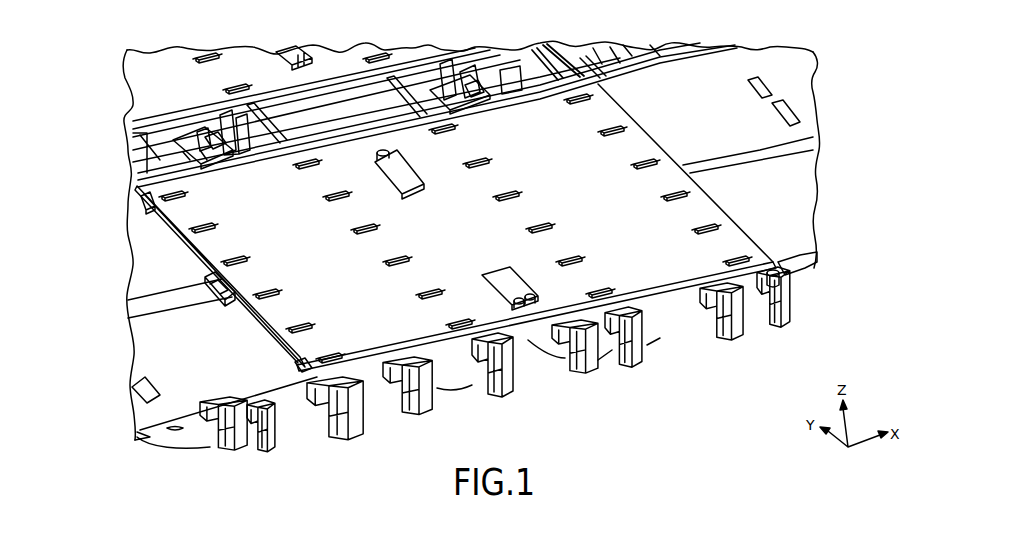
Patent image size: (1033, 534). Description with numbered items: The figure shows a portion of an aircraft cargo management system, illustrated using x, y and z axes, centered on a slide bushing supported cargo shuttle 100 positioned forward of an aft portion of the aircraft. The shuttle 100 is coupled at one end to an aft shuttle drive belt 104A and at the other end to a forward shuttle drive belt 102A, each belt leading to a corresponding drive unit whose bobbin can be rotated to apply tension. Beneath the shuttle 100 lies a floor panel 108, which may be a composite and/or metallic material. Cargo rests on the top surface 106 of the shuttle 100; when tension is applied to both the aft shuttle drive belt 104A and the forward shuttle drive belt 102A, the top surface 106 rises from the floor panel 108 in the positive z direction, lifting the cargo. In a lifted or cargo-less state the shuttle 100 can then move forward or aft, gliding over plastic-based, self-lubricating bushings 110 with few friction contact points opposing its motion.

The slide bushing supported cargo shuttle 100 is at (182, 455).
The forward shuttle drive belt 102A is at (783, 92).
The aft shuttle drive belt 104A is at (198, 297).
The top surface 106 is at (503, 312).
The floor panel 108 is at (153, 261).
The bushings 110 is at (762, 90).